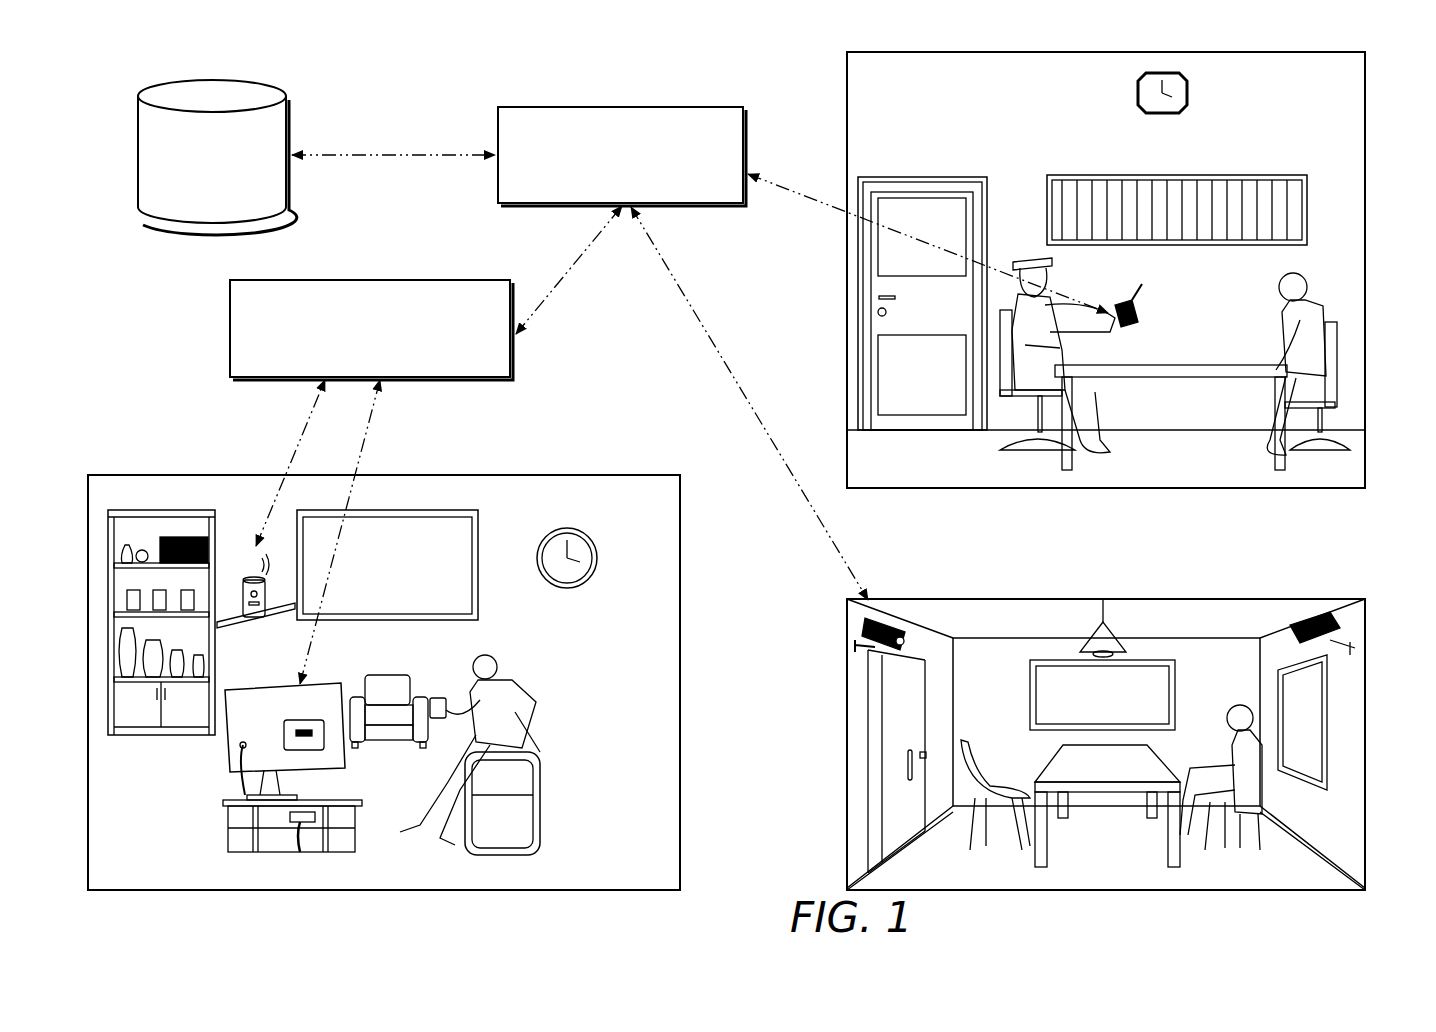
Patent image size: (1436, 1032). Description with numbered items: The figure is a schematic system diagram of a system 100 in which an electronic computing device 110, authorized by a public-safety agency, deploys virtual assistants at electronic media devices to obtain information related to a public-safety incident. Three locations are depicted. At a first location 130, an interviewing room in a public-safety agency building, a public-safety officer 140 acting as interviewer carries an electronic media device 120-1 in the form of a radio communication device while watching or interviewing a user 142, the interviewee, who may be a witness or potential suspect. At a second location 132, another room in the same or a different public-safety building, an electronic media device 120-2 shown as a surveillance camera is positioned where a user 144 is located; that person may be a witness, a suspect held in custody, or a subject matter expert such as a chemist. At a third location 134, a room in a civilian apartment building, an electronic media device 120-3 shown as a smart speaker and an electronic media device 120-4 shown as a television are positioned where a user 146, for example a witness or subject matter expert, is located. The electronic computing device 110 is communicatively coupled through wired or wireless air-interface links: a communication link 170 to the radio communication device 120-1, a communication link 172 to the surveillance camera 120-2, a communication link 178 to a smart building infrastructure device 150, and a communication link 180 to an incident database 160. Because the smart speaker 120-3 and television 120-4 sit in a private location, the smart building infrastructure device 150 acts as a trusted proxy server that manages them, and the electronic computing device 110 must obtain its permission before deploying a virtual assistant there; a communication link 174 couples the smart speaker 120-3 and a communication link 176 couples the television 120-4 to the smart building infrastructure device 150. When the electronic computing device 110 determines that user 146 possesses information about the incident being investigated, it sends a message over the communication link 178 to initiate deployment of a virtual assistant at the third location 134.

The system 100 is at (116, 53).
The electronic computing device 110 is at (622, 107).
The electronic media device 120-1 is at (1125, 328).
The electronic media device 120-2 is at (862, 660).
The electronic media device 120-3 is at (248, 575).
The electronic media device 120-4 is at (222, 745).
The first location 130 is at (1108, 52).
The second location 132 is at (1150, 599).
The third location 134 is at (384, 682).
The public-safety officer 140 is at (1035, 258).
The user 142 is at (1305, 272).
The user 144 is at (1248, 712).
The user 146 is at (512, 700).
The smart building infrastructure device 150 is at (372, 280).
The incident database 160 is at (208, 79).
The communication link 170 is at (805, 197).
The communication link 172 is at (703, 342).
The communication link 174 is at (302, 447).
The communication link 176 is at (360, 470).
The communication link 178 is at (587, 247).
The communication link 180 is at (368, 152).